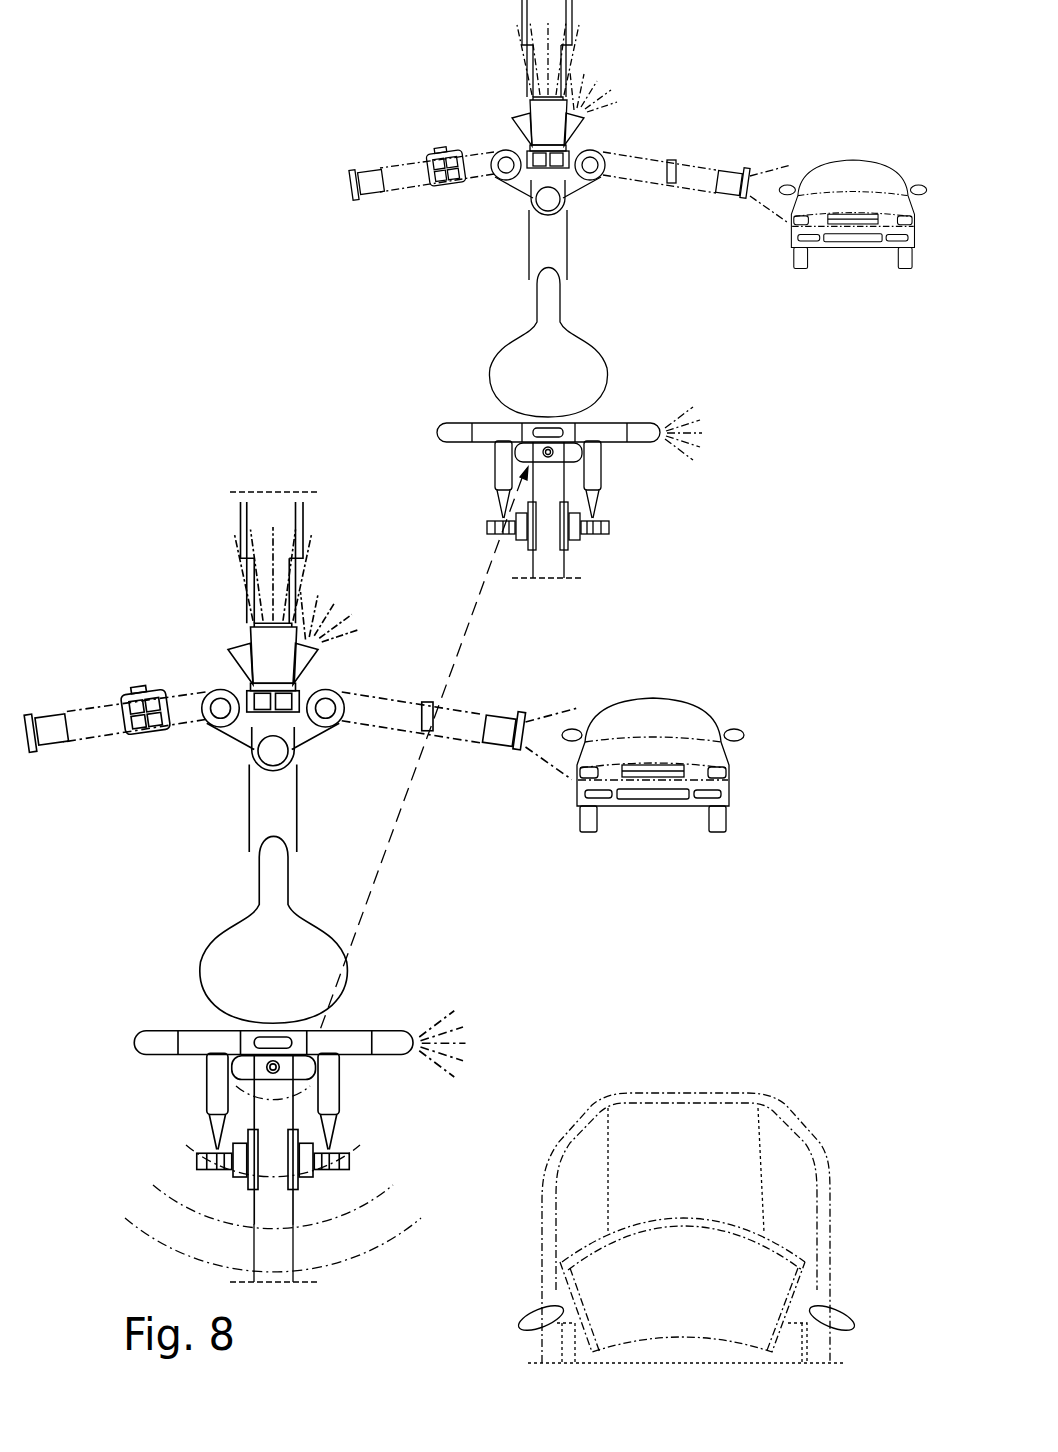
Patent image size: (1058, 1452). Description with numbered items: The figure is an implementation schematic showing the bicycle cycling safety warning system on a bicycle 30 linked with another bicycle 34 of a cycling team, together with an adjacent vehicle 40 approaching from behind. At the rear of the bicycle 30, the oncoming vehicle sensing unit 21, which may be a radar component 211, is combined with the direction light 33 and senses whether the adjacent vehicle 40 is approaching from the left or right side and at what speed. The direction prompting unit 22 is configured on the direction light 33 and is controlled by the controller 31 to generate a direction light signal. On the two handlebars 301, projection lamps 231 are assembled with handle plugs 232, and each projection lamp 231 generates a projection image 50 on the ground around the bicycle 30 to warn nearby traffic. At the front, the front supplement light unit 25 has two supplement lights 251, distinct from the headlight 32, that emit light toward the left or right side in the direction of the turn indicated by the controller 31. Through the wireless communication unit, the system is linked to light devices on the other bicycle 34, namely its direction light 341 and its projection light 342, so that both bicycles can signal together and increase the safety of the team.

The oncoming vehicle sensing unit 21 is at (232, 1078).
The radar component 211 is at (305, 1064).
The direction prompting unit 22 is at (158, 1016).
The front supplement light unit 25 is at (200, 603).
The supplement light 251 is at (191, 568).
The projection lamp 231 is at (44, 756).
The handle plug 232 is at (46, 712).
The bicycle 30 is at (246, 912).
The handlebar 301 is at (108, 705).
The controller 31 is at (155, 736).
The headlight 32 is at (283, 665).
The direction light 33 is at (401, 1040).
The other bicycle 34 is at (522, 313).
The direction light 341 is at (642, 432).
The projection light 342 is at (363, 172).
The adjacent vehicle 40 is at (608, 1092).
The projection image 50 is at (850, 160).